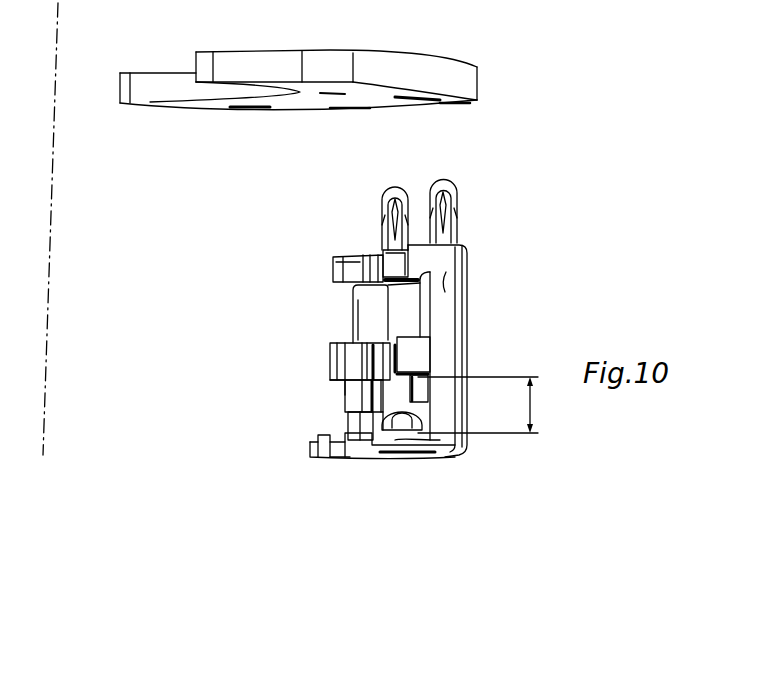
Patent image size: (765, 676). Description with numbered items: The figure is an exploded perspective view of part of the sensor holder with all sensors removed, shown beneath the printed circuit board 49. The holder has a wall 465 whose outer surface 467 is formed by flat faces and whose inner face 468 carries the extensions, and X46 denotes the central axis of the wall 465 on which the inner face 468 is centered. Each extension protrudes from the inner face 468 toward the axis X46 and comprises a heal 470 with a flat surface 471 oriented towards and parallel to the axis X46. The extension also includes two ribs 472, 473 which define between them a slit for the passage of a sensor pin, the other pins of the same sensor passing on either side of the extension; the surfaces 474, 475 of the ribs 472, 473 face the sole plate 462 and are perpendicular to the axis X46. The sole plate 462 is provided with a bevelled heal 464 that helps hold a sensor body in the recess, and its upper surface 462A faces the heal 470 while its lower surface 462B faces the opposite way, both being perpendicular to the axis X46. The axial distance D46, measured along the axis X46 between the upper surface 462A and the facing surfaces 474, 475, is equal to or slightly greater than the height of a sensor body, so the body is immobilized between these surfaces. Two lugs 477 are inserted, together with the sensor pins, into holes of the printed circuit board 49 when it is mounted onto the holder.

The printed circuit board 49 is at (436, 72).
The lugs 477 is at (393, 187).
The wall 465 is at (446, 292).
The outer surface 467 is at (470, 296).
The inner face 468 is at (364, 300).
The heal 470 is at (362, 393).
The rib 472 is at (332, 352).
The rib 473 is at (415, 352).
The surface of rib 474 is at (326, 385).
The flat surface 471 is at (338, 400).
The surface of rib 475 is at (426, 380).
The bevelled heal 464 is at (340, 433).
The sole plate 462 is at (312, 447).
The upper surface 462A is at (405, 432).
The lower surface 462B is at (337, 470).
The axial distance D46 is at (490, 405).
The central axis X46 is at (51, 242).